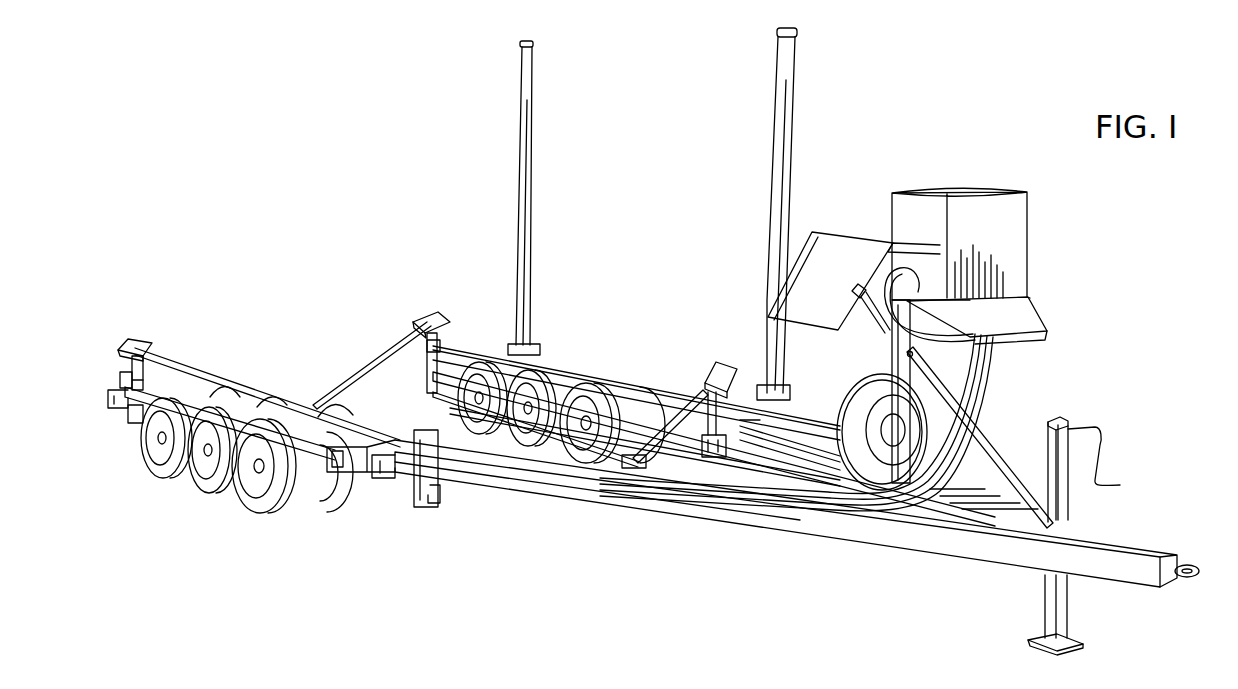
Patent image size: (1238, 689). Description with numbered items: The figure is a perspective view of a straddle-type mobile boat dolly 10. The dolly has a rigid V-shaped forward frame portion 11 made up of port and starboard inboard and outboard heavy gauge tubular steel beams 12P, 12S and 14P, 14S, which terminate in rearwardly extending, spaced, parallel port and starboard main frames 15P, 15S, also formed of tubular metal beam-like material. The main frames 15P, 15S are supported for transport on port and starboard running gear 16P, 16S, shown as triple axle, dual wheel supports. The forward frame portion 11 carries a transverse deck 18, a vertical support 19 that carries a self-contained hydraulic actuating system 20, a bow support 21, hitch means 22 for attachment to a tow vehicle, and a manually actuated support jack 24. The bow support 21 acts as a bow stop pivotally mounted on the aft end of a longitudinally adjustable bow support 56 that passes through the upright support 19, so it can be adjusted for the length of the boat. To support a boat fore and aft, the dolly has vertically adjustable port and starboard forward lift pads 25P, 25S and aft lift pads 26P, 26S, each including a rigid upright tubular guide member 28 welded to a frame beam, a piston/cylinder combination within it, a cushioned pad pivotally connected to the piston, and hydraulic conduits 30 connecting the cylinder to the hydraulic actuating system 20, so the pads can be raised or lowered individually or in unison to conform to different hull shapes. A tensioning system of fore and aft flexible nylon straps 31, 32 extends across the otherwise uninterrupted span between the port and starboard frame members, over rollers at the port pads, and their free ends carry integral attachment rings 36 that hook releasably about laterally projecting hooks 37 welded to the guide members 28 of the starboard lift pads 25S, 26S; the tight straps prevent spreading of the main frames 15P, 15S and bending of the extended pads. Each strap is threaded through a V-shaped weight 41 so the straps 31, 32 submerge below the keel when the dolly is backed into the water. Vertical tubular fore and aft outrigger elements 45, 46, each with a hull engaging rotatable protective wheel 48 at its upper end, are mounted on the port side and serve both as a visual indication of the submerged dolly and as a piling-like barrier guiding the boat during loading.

The mobile boat dolly 10 is at (398, 210).
The forward frame portion 11 is at (1072, 394).
The starboard inboard tubular steel beam 12S is at (677, 478).
The port inboard tubular steel beam 12P is at (780, 458).
The starboard outboard tubular steel beam 14S is at (647, 492).
The port outboard tubular steel beam 14P is at (797, 422).
The starboard main frame 15S is at (318, 445).
The port main frame 15P is at (572, 382).
The starboard running gear 16S is at (186, 499).
The port running gear 16P is at (430, 377).
The transverse deck 18 is at (918, 512).
The vertical support 19 is at (898, 364).
The self-contained hydraulic actuating system 20 is at (1020, 215).
The bow support 21 is at (826, 245).
The hitch means 22 is at (1189, 558).
The support jack 24 is at (1068, 487).
The starboard forward lift pad 25S is at (461, 430).
The port forward lift pad 25P is at (719, 362).
The starboard aft lift pad 26S is at (140, 340).
The port aft lift pad 26P is at (440, 316).
The tubular guide member 28 is at (430, 345).
The hydraulic conduits 30 is at (950, 393).
The fore flexible strap 31 is at (680, 392).
The aft flexible strap 32 is at (366, 380).
The attachment ring 36 is at (118, 379).
The hook 37 is at (110, 396).
The V-shaped weight 41 is at (323, 398).
The fore outrigger element 45 is at (783, 117).
The aft outrigger element 46 is at (530, 118).
The protective wheel 48 is at (535, 44).
The bow support 56 is at (982, 448).